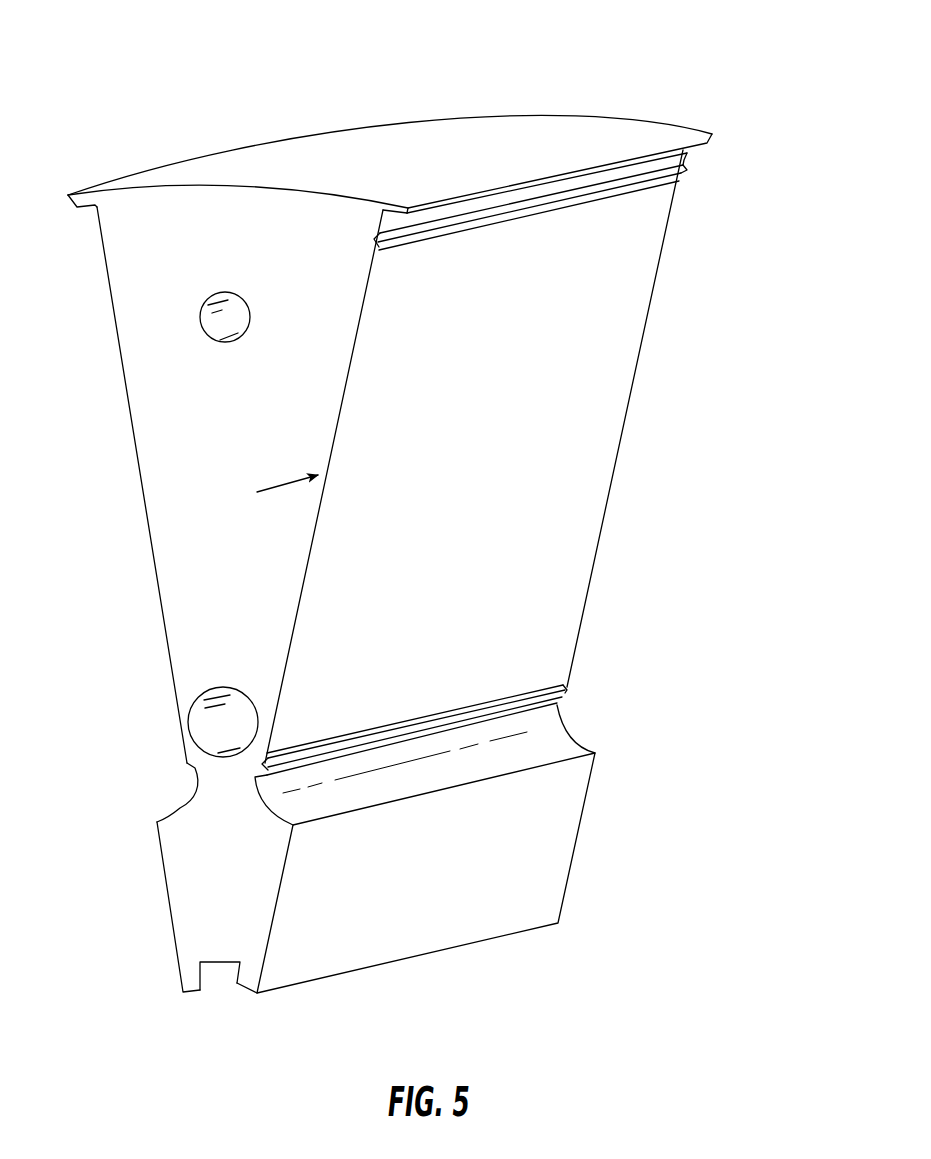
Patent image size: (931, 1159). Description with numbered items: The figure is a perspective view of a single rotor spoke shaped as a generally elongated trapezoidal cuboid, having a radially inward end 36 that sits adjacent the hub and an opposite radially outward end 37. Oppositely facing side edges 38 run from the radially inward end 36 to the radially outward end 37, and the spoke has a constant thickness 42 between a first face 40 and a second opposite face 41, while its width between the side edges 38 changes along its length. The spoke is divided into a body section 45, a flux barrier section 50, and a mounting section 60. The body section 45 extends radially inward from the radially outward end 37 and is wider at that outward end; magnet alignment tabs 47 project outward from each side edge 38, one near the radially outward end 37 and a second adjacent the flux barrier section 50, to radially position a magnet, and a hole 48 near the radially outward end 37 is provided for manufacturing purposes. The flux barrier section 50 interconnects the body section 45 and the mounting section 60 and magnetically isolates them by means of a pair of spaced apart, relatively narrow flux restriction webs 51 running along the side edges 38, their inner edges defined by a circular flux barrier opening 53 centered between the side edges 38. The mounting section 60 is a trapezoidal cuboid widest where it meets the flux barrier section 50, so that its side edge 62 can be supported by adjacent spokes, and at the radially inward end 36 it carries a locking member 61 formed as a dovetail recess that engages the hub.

The radially inward end 36 is at (180, 1056).
The radially outward end 37 is at (186, 118).
The side edges 38 is at (138, 475).
The first face 40 is at (170, 538).
The second face 41 is at (607, 515).
The thickness 42 is at (642, 399).
The body section 45 is at (741, 292).
The magnet alignment tabs 47 is at (95, 225).
The hole 48 is at (212, 298).
The flux barrier section 50 is at (633, 667).
The flux restriction webs 51 is at (187, 718).
The flux barrier opening 53 is at (225, 690).
The mounting section 60 is at (644, 847).
The locking member 61 is at (212, 977).
The side edge of the mounting section 62 is at (167, 907).